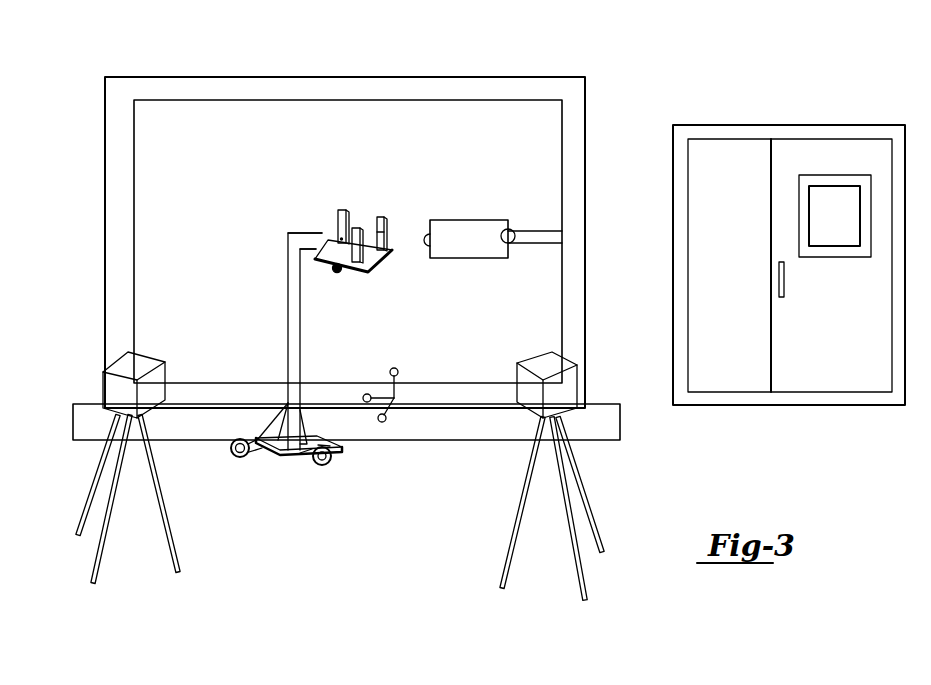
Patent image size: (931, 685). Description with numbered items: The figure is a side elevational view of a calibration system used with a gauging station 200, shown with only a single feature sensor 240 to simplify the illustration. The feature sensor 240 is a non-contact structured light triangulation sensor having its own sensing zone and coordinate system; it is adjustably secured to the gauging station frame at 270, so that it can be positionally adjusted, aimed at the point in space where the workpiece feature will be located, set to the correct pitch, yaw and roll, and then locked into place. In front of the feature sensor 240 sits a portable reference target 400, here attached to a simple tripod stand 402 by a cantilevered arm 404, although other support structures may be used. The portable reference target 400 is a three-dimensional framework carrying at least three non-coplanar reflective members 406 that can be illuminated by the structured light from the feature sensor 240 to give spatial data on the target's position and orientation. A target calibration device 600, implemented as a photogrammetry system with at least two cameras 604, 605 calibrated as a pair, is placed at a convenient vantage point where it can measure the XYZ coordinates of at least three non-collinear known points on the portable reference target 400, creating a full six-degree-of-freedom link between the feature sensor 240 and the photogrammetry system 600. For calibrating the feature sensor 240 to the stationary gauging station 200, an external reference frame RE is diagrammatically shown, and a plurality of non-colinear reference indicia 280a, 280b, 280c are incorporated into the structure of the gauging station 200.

The gauging station 200 is at (207, 61).
The feature sensor 240 is at (448, 251).
The adjustable securing point on gauging station frame 270 is at (509, 228).
The portable reference target 400 is at (372, 203).
The tripod stand 402 is at (292, 287).
The cantilevered arm 404 is at (313, 235).
The non-coplanar reflective members 406 is at (338, 220).
The reference indicium 280a is at (398, 370).
The reference indicium 280b is at (382, 422).
The reference indicium 280c is at (364, 396).
The external reference frame RE is at (395, 388).
The target calibration device 600 is at (177, 530).
The camera 604 is at (113, 390).
The camera 605 is at (560, 392).